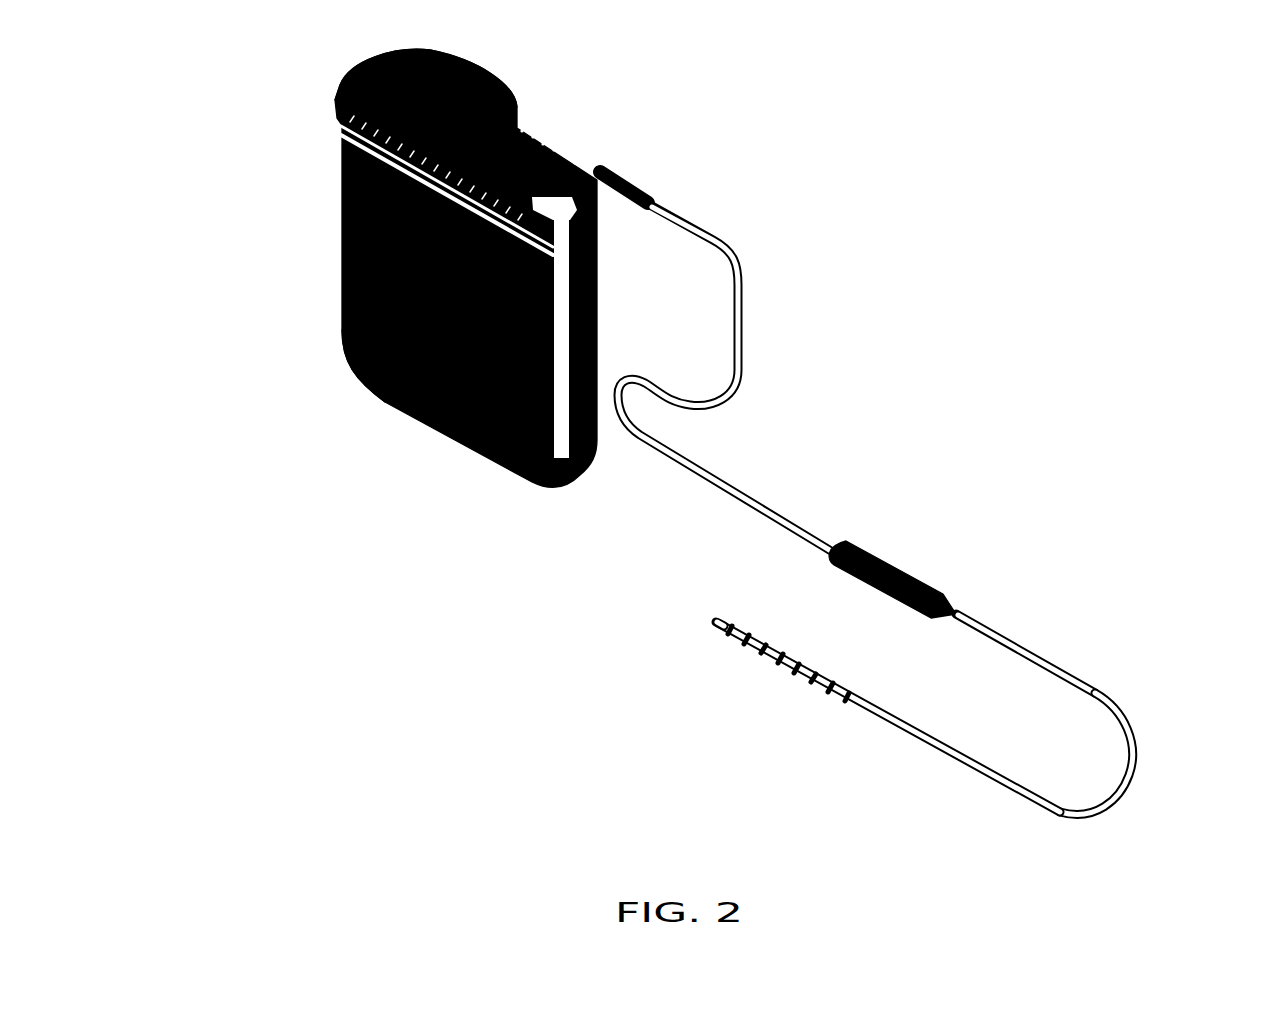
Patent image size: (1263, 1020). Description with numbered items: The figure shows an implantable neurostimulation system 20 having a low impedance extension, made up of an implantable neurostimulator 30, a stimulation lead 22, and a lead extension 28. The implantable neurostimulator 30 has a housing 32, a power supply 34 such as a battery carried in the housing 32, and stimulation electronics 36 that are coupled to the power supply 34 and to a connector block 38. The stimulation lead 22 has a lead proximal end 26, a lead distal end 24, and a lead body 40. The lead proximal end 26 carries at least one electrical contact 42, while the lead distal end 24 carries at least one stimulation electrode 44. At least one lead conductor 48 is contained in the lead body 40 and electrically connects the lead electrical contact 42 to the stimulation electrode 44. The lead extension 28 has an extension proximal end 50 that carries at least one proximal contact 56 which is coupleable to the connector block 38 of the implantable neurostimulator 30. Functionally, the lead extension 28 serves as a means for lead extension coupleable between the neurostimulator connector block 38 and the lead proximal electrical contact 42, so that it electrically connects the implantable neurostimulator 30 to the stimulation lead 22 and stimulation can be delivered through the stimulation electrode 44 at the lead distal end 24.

The implantable neurostimulation system 20 is at (913, 122).
The stimulation lead 22 is at (918, 538).
The lead distal end 24 is at (713, 628).
The lead proximal end 26 is at (960, 612).
The lead extension 28 is at (733, 400).
The implantable neurostimulator 30 is at (437, 308).
The housing 32 is at (358, 373).
The power supply 34 is at (312, 217).
The stimulation electronics 36 is at (312, 272).
The connector block 38 is at (470, 70).
The lead body 40 is at (1136, 770).
The electrical contact 42 is at (932, 562).
The stimulation electrode 44 is at (773, 682).
The lead conductor 48 is at (996, 797).
The extension proximal end 50 is at (605, 168).
The proximal contact 56 is at (560, 140).